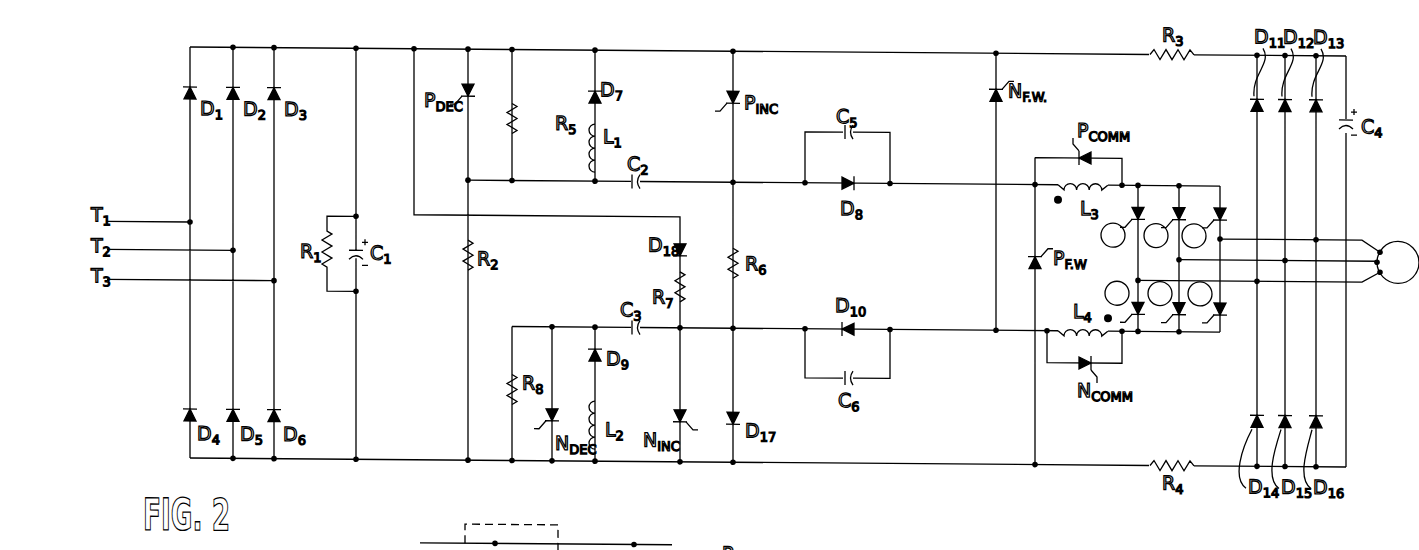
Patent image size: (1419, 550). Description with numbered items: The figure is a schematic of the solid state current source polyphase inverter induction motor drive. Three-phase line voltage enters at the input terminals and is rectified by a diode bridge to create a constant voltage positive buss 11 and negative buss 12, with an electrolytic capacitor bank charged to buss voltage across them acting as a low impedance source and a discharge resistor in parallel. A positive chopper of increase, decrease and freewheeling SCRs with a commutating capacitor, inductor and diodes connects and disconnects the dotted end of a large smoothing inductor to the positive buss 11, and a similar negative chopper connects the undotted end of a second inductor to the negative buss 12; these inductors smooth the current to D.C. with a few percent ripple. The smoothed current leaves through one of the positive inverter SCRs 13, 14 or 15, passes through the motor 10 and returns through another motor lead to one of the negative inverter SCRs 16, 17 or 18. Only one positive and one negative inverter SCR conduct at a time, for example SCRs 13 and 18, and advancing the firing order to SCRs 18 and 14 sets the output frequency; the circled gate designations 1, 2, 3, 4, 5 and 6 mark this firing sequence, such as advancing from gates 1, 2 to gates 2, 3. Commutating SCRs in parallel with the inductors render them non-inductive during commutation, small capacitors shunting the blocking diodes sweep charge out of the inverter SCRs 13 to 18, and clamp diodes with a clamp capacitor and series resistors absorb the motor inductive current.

The motor 10 is at (1400, 233).
The positive buss 11 is at (333, 47).
The negative buss 12 is at (409, 458).
The positive inverter SCR 13 is at (1141, 198).
The positive inverter SCR 14 is at (1181, 198).
The positive inverter SCR 15 is at (1217, 198).
The negative inverter SCR 16 is at (1147, 331).
The negative inverter SCR 17 is at (1186, 332).
The negative inverter SCR 18 is at (1225, 332).
The inverter SCR gate 1 is at (1113, 235).
The inverter SCR gate 2 is at (1200, 294).
The inverter SCR gate 3 is at (1156, 235).
The inverter SCR gate 4 is at (1117, 293).
The inverter SCR gate 5 is at (1194, 236).
The inverter SCR gate 6 is at (1160, 293).